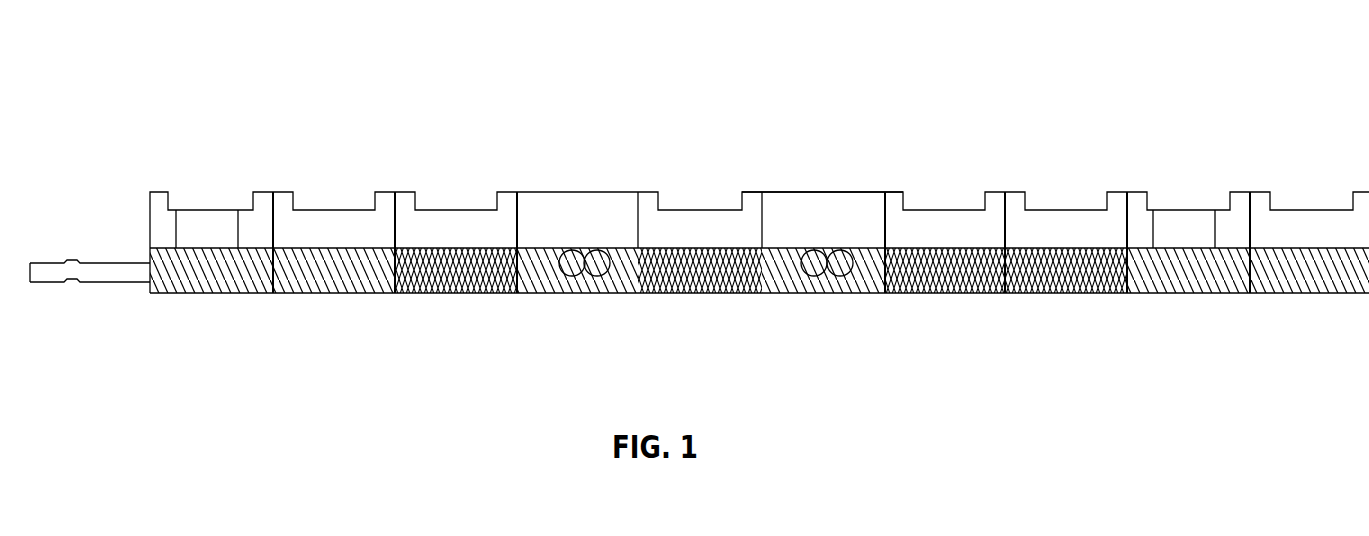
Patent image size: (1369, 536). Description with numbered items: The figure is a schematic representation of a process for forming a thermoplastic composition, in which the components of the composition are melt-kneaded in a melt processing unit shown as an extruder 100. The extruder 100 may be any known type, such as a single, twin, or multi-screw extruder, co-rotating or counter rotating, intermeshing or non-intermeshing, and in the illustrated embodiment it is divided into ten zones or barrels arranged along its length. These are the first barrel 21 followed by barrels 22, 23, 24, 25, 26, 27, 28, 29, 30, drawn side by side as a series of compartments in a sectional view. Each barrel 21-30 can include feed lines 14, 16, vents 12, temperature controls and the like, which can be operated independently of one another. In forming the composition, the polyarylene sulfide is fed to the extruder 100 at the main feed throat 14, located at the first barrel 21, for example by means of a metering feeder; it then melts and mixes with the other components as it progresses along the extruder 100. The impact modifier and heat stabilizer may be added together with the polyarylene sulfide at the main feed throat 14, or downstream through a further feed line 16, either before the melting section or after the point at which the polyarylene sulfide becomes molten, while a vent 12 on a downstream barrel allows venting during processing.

The extruder 100 is at (296, 121).
The vent 12 is at (1176, 191).
The main feed throat 14 is at (203, 190).
The feed line 16 is at (835, 174).
The first barrel 21 is at (267, 241).
The barrel 22 is at (329, 241).
The barrel 23 is at (455, 241).
The barrel 24 is at (577, 241).
The barrel 25 is at (699, 241).
The barrel 26 is at (820, 241).
The barrel 27 is at (944, 241).
The barrel 28 is at (1065, 241).
The barrel 29 is at (1243, 241).
The barrel 30 is at (1310, 241).